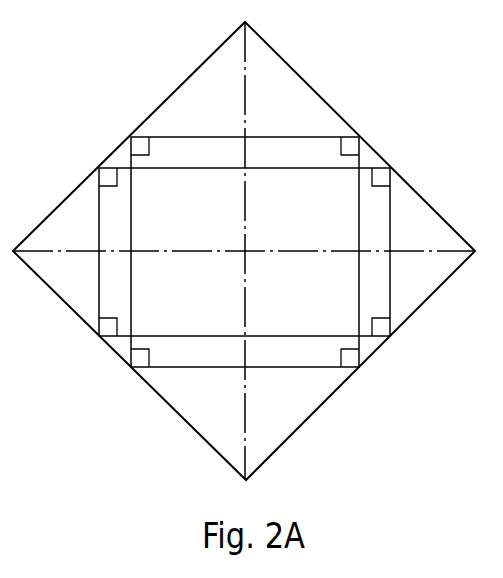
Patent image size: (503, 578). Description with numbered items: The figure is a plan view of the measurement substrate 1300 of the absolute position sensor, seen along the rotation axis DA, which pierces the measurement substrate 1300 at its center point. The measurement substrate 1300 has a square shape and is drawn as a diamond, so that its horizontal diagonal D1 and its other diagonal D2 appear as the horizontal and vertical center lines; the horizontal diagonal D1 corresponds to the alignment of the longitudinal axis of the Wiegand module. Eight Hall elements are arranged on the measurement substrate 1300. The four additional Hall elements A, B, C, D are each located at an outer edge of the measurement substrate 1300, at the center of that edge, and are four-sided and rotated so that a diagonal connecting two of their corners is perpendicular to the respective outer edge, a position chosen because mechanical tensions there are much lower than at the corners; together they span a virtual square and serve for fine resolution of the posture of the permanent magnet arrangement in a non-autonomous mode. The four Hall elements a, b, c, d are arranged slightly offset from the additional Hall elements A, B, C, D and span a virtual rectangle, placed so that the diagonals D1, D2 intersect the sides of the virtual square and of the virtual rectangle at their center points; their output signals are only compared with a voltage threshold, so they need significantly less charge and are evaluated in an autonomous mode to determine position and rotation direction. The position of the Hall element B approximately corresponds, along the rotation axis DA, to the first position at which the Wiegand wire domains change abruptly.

The measurement substrate 1300 is at (361, 98).
The horizontal diagonal D1 is at (435, 251).
The diagonal D2 is at (250, 83).
The rotation axis DA is at (245, 251).
The additional Hall element A is at (131, 133).
The additional Hall element B is at (361, 131).
The additional Hall element C is at (362, 371).
The additional Hall element D is at (131, 371).
The Hall element a is at (101, 164).
The Hall element b is at (390, 164).
The Hall element c is at (390, 341).
The Hall element d is at (102, 341).